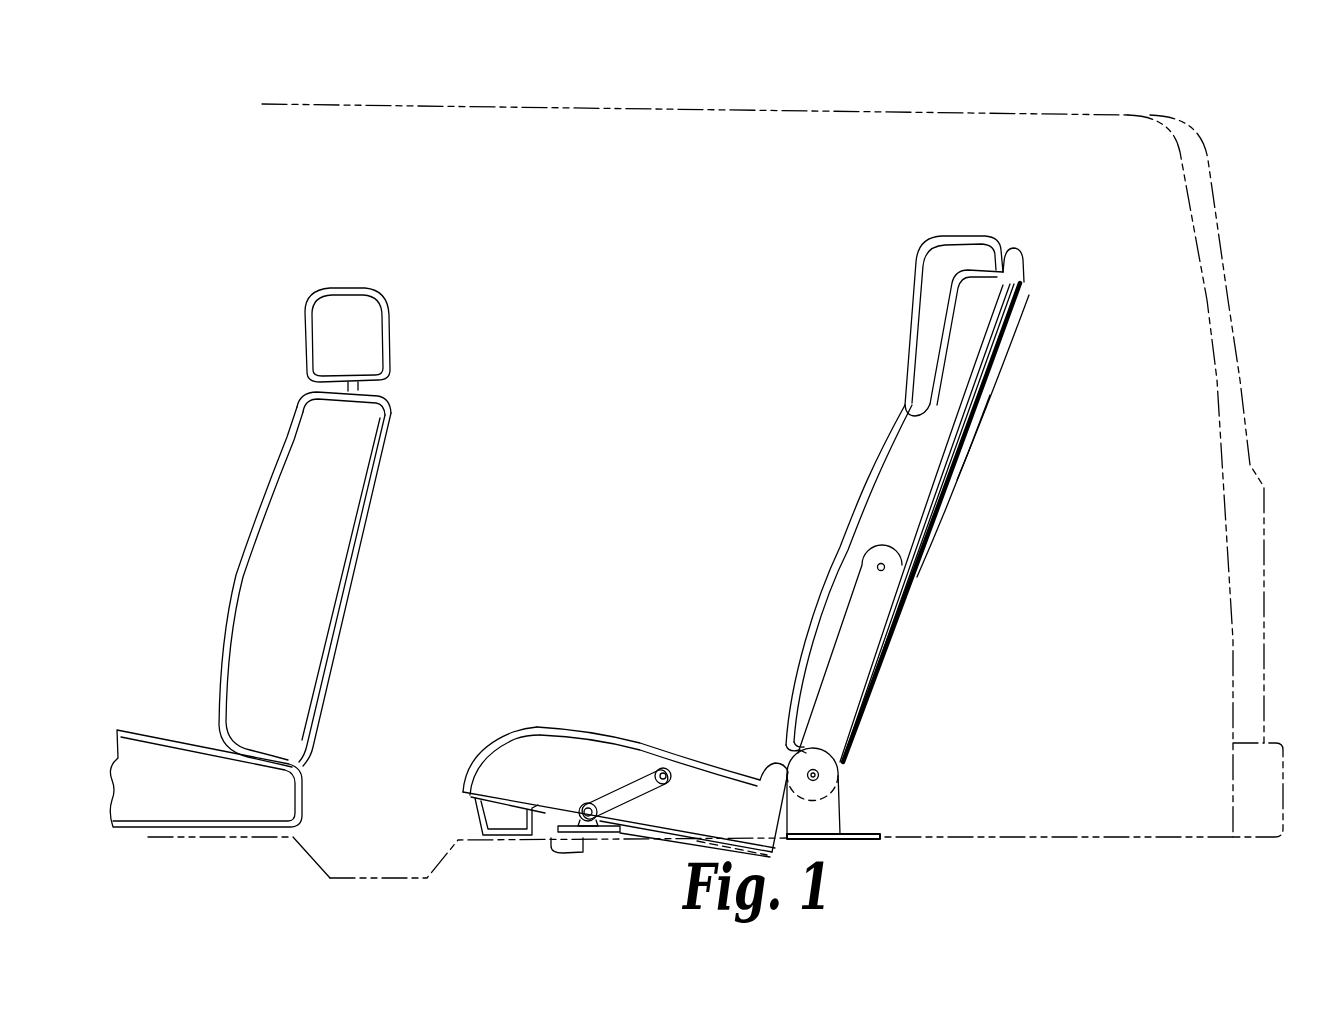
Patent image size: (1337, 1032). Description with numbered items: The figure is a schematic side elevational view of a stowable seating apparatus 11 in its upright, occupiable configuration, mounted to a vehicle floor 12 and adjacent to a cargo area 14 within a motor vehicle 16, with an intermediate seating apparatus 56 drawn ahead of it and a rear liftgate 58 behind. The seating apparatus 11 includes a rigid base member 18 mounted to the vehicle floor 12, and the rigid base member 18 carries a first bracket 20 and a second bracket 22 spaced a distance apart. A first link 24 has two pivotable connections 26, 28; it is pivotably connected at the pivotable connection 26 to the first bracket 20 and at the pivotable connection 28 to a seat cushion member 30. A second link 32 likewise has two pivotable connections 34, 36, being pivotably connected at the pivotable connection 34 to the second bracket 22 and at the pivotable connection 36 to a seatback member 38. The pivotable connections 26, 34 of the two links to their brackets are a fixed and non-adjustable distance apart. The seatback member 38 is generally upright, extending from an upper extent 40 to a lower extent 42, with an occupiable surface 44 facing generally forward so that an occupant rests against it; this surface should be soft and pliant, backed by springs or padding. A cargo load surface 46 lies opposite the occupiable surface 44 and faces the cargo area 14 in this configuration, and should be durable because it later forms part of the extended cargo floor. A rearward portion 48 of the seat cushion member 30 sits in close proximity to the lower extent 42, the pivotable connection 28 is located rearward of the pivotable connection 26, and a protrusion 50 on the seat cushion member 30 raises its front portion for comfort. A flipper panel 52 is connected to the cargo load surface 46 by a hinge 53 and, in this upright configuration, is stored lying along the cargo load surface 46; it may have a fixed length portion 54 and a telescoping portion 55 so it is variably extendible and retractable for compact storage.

The stowable seating apparatus 11 is at (682, 451).
The vehicle floor 12 is at (333, 878).
The cargo area 14 is at (1087, 565).
The motor vehicle 16 is at (357, 98).
The rigid base member 18 is at (878, 836).
The first bracket 20 is at (541, 741).
The second bracket 22 is at (840, 802).
The first link 24 is at (612, 787).
The pivotable connection 26 is at (588, 803).
The pivotable connection 28 is at (663, 768).
The seat cushion member 30 is at (502, 735).
The second link 32 is at (840, 622).
The pivotable connection 34 is at (818, 775).
The pivotable connection 36 is at (884, 567).
The seatback member 38 is at (878, 465).
The upper extent 40 is at (948, 220).
The lower extent 42 is at (757, 712).
The occupiable surface 44 is at (826, 545).
The cargo load surface 46 is at (890, 678).
The rearward portion 48 is at (754, 750).
The protrusion 50 is at (478, 815).
The flipper panel 52 is at (995, 456).
The hinge 53 is at (1024, 284).
The fixed length portion 54 is at (985, 420).
The telescoping portion 55 is at (952, 500).
The intermediate seating apparatus 56 is at (268, 412).
The rear liftgate 58 is at (1227, 268).